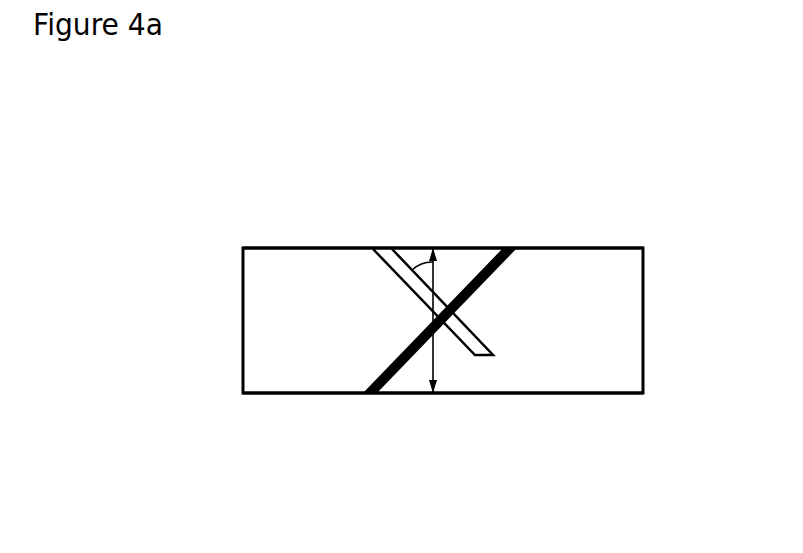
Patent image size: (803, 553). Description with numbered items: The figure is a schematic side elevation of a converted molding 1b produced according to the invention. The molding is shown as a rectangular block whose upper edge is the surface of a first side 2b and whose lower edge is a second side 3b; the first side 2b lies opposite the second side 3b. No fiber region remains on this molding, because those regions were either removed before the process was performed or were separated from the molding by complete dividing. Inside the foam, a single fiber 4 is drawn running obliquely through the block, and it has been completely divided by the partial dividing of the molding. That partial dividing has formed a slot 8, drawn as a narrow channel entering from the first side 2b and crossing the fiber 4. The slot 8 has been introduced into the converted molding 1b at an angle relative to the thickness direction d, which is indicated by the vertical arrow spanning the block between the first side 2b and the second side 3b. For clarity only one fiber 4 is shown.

The converted molding 1b is at (270, 220).
The first side of the converted molding 2b is at (620, 247).
The second side of the converted molding 3b is at (602, 395).
The fiber 4 is at (508, 250).
The slot 8 is at (392, 266).
The thickness direction d is at (443, 320).